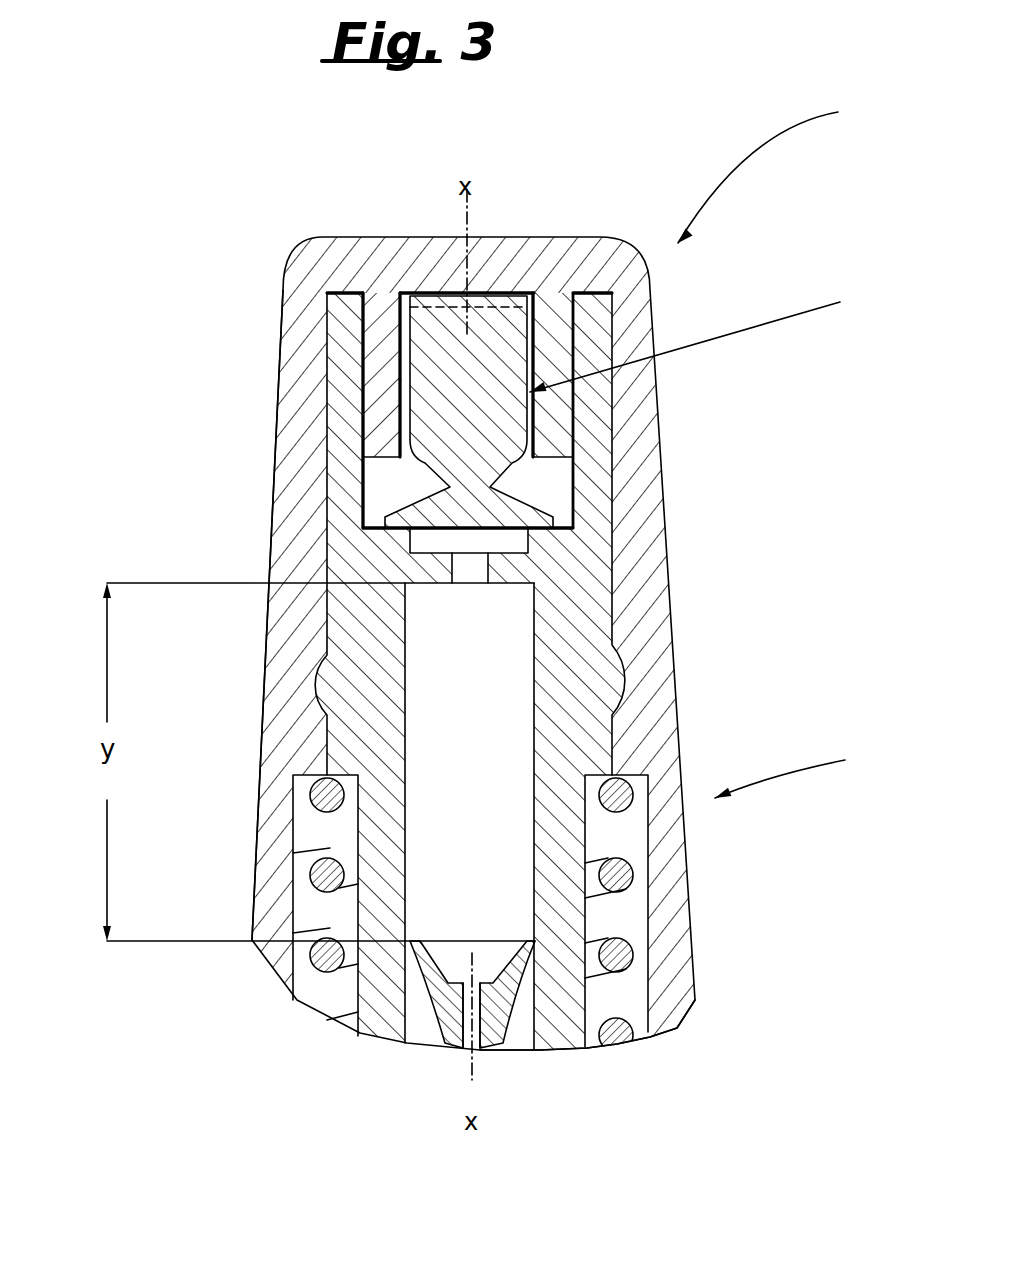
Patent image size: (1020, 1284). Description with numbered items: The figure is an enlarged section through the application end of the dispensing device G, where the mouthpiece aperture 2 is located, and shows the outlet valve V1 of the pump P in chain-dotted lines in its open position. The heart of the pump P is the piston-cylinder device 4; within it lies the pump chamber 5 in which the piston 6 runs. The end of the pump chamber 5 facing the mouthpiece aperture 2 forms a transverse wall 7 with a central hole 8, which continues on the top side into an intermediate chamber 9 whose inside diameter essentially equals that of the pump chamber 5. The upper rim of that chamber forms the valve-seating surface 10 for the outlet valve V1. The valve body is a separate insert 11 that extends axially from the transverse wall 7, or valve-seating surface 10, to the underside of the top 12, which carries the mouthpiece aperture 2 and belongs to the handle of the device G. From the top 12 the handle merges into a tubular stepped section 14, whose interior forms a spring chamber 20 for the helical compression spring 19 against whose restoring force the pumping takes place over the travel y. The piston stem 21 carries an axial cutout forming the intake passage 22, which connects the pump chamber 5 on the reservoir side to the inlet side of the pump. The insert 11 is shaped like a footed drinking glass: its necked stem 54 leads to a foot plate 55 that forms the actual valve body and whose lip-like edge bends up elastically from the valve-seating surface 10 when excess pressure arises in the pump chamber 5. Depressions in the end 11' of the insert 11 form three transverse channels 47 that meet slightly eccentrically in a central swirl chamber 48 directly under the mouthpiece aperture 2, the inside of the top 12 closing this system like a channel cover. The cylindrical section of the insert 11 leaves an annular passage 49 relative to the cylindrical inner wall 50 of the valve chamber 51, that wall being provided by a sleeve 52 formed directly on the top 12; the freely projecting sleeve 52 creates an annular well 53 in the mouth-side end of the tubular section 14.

The mouthpiece aperture 2 is at (453, 262).
The device G is at (773, 167).
The pump P is at (790, 771).
The outlet valve V1 is at (709, 338).
The piston-cylinder device 4 is at (240, 700).
The pump chamber 5 is at (540, 637).
The piston 6 is at (527, 960).
The transverse wall 7 is at (507, 567).
The hole 8 is at (455, 566).
The intermediate chamber 9 is at (412, 543).
The valve-seating surface 10 is at (370, 500).
The insert 11 is at (584, 412).
The end of the insert 11' is at (608, 211).
The top 12 is at (500, 268).
The tubular stepped section 14 is at (262, 778).
The spring 19 is at (312, 874).
The spring chamber 20 is at (295, 906).
The piston stem 21 is at (545, 1040).
The intake passage 22 is at (478, 1033).
The transverse channels 47 is at (435, 307).
The swirl chamber 48 is at (486, 293).
The passage 49 is at (402, 365).
The inner wall 50 is at (402, 398).
The valve chamber 51 is at (548, 468).
The sleeve 52 is at (323, 292).
The annular well 53 is at (387, 348).
The stem 54 is at (448, 488).
The foot plate 55 is at (584, 533).